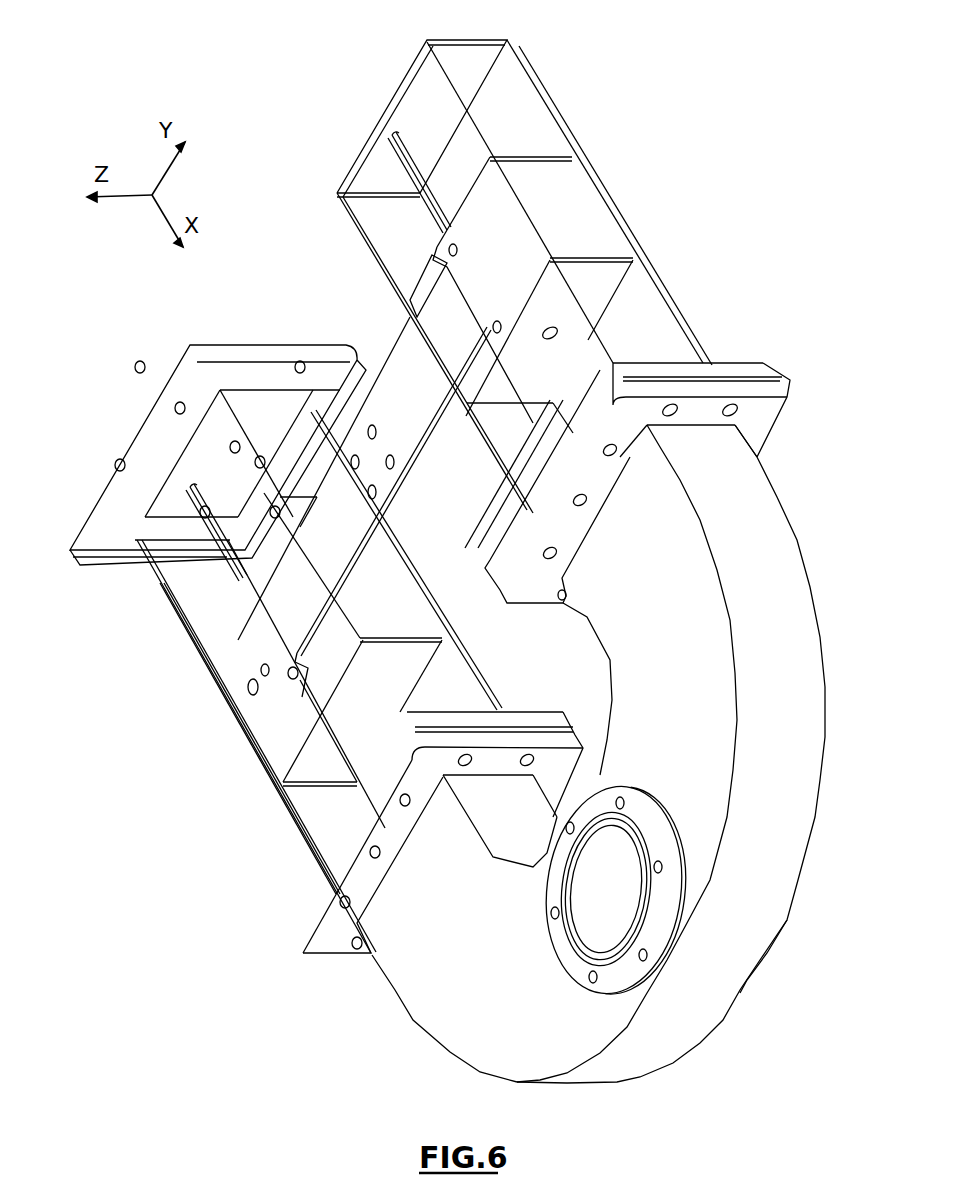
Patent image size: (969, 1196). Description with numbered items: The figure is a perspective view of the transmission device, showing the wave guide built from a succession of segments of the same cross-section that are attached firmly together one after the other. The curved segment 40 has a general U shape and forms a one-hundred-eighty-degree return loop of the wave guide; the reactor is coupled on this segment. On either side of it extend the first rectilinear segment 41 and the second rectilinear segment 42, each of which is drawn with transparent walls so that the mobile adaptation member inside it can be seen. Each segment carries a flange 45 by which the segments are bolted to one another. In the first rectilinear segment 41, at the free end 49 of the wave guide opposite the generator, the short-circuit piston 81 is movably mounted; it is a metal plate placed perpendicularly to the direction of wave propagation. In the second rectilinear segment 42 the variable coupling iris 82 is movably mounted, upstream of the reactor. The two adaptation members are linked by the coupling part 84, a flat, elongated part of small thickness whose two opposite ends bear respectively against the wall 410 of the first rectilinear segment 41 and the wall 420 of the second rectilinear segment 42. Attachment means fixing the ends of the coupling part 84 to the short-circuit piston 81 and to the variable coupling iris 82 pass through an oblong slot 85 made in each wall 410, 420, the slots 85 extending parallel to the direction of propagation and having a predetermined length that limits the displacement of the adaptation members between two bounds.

The curved segment 40 is at (433, 982).
The first rectilinear segment 41 is at (480, 270).
The second rectilinear segment 42 is at (300, 681).
The flange 45 is at (745, 372).
The free end 49 is at (415, 48).
The short-circuit piston 81 is at (570, 210).
The variable coupling iris 82 is at (280, 742).
The coupling part 84 is at (410, 370).
The slot 85 is at (400, 146).
The wall 410 is at (358, 202).
The wall 420 is at (198, 597).